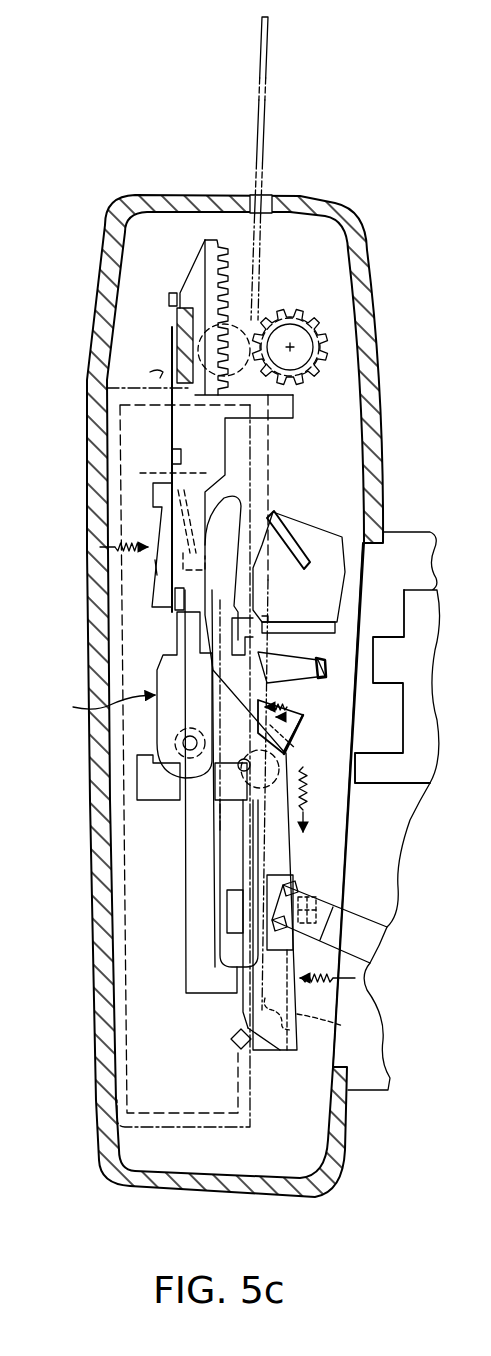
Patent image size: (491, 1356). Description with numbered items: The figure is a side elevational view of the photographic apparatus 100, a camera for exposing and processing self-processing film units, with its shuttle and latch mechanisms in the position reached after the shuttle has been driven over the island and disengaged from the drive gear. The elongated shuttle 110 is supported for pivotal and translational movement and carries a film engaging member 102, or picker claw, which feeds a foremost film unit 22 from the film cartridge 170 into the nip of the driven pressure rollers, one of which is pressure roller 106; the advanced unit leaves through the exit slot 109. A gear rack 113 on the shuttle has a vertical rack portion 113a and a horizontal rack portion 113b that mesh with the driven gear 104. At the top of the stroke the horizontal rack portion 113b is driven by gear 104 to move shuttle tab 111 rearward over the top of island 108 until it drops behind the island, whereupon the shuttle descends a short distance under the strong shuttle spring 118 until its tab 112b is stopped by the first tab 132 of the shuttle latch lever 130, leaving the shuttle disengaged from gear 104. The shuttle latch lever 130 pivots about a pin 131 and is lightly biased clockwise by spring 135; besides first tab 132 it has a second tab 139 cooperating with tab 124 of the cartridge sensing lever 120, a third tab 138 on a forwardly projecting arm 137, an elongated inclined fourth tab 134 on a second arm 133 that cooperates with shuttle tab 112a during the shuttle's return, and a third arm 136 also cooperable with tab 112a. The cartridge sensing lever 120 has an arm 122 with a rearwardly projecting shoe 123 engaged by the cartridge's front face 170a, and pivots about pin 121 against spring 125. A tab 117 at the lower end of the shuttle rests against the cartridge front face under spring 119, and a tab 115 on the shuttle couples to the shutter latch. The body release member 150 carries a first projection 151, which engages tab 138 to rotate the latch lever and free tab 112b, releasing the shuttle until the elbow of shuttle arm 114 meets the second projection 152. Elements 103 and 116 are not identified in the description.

The foremost film unit 22 is at (265, 115).
The photographic apparatus 100 is at (163, 188).
The film engaging member 102 is at (233, 1042).
The latch block 103 is at (340, 925).
The gear 104 is at (290, 316).
The pressure roller 106 is at (192, 288).
The island 108 is at (185, 330).
The exit slot 109 is at (253, 196).
The shuttle 110 is at (150, 372).
The shuttle tab 111 is at (169, 299).
The tab 112a is at (172, 452).
The tab 112b is at (175, 600).
The gear rack 113 is at (228, 292).
The vertical rack portion 113a is at (230, 248).
The horizontal rack portion 113b is at (296, 405).
The arm 114 is at (307, 768).
The tab 115 is at (304, 900).
The slide plate 116 is at (224, 957).
The tab 117 is at (316, 901).
The shuttle spring 118 is at (308, 832).
The spring 119 is at (348, 980).
The cartridge sensing lever 120 is at (303, 716).
The pin 121 is at (298, 735).
The arm 122 is at (363, 605).
The shoe 123 is at (293, 543).
The tab 124 is at (283, 633).
The spring 125 is at (288, 707).
The shuttle latch lever 130 is at (96, 708).
The pin 131 is at (183, 745).
The first tab 132 is at (177, 622).
The second arm 133 is at (156, 572).
The fourth tab 134 is at (153, 484).
The spring 135 is at (128, 540).
The third arm 136 is at (230, 498).
The forwardly projecting arm 137 is at (328, 690).
The third tab 138 is at (325, 668).
The second tab 139 is at (253, 616).
The body release member 150 is at (412, 768).
The first projection 151 is at (388, 655).
The second projection 152 is at (357, 768).
The film cartridge 170 is at (107, 388).
The front face 170a is at (270, 466).